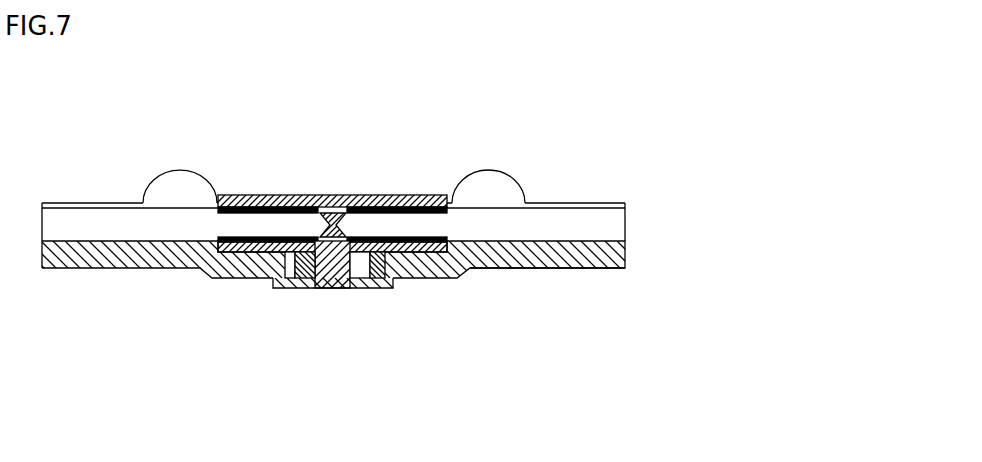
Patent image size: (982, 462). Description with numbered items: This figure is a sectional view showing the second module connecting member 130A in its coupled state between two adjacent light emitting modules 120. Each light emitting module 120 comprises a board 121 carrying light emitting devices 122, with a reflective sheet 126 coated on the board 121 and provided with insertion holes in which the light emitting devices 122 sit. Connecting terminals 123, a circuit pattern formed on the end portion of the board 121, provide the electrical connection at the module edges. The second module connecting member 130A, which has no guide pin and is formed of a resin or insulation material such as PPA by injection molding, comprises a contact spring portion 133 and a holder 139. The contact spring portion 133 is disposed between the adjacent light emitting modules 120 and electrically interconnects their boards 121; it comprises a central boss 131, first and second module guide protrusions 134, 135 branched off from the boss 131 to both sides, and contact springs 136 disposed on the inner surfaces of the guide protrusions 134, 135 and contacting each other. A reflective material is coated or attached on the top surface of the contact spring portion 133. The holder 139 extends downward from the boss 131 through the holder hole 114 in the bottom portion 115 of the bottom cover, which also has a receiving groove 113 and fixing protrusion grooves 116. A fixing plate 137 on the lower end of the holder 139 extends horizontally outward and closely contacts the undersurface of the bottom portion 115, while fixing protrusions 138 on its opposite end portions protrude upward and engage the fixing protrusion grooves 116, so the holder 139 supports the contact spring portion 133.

The receiving groove 113 is at (397, 288).
The holder hole 114 is at (352, 288).
The bottom portion 115 is at (617, 257).
The fixing protrusion grooves 116 is at (253, 280).
The light emitting module 120 is at (708, 168).
The board 121 is at (613, 227).
The light emitting devices 122 is at (510, 190).
The connecting terminals 123 is at (433, 238).
The reflective sheet 126 is at (91, 203).
The second module connecting member 130A is at (256, 159).
The central boss 131 is at (338, 213).
The contact spring portion 133 is at (430, 188).
The first module guide protrusion 134 is at (278, 198).
The second module guide protrusion 135 is at (388, 197).
The contact springs 136 is at (443, 278).
The fixing plate 137 is at (313, 287).
The fixing protrusions 138 is at (287, 283).
The holder 139 is at (343, 288).